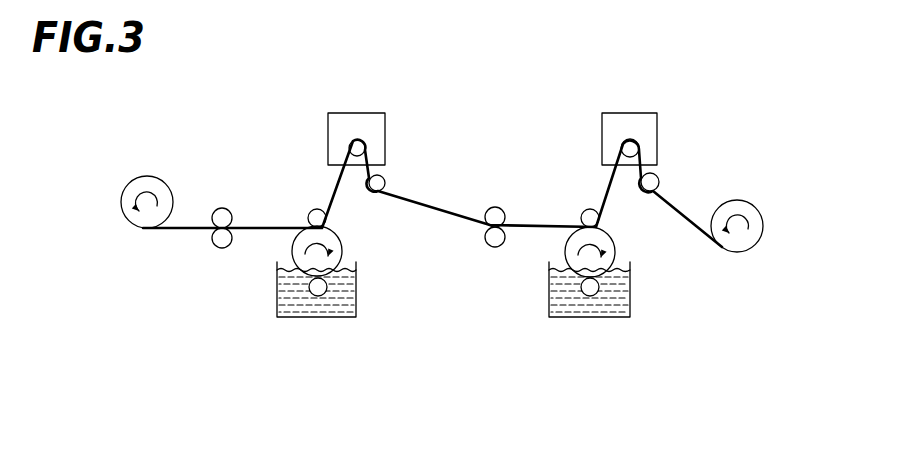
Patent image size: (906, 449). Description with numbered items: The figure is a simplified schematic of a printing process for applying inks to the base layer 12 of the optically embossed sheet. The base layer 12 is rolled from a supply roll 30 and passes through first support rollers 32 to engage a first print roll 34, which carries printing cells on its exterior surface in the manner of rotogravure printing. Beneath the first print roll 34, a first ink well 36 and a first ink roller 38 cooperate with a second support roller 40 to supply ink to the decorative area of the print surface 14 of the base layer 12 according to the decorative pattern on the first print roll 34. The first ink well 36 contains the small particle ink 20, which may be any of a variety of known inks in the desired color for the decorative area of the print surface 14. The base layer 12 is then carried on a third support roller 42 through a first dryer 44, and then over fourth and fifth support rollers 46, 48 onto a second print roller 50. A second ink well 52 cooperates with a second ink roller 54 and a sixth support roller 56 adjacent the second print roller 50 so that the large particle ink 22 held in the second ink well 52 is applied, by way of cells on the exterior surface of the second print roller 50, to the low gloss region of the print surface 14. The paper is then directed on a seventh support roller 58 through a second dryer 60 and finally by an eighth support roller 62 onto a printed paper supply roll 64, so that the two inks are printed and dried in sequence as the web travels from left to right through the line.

The base layer 12 is at (169, 237).
The print surface 14 is at (185, 228).
The small particle ink 20 is at (338, 304).
The large particle ink 22 is at (613, 304).
The supply roll 30 is at (153, 182).
The first support rollers 32 is at (213, 245).
The first print roll 34 is at (293, 240).
The first ink well 36 is at (303, 318).
The first ink roller 38 is at (309, 286).
The second support roller 40 is at (310, 215).
The third support roller 42 is at (351, 142).
The first dryer 44 is at (384, 122).
The fourth support roller 46 is at (386, 183).
The fifth support roller 48 is at (493, 207).
The second print roller 50 is at (585, 250).
The second ink well 52 is at (575, 318).
The second ink roller 54 is at (581, 284).
The sixth support roller 56 is at (587, 209).
The seventh support roller 58 is at (633, 144).
The second dryer 60 is at (613, 122).
The eighth support roller 62 is at (656, 181).
The printed paper supply roll 64 is at (743, 251).